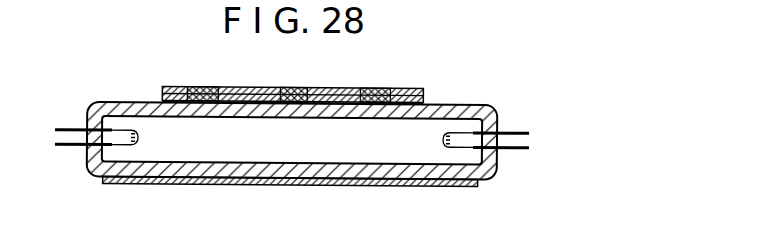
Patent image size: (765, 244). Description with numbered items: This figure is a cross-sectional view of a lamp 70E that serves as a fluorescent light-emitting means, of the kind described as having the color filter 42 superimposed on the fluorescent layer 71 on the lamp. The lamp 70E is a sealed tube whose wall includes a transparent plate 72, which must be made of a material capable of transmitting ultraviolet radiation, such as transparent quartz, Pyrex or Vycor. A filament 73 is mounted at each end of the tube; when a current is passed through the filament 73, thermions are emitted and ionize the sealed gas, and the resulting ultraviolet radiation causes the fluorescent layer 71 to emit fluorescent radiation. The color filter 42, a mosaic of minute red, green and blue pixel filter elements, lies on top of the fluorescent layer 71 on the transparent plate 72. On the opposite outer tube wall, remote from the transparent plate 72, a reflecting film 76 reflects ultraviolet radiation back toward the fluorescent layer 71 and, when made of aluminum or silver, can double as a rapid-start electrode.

The lamp 70E is at (337, 132).
The transparent plate 72 is at (497, 108).
The color filter 42 is at (421, 90).
The fluorescent layer 71 is at (423, 102).
The reflecting film 76 is at (457, 185).
The filament 73 is at (134, 133).